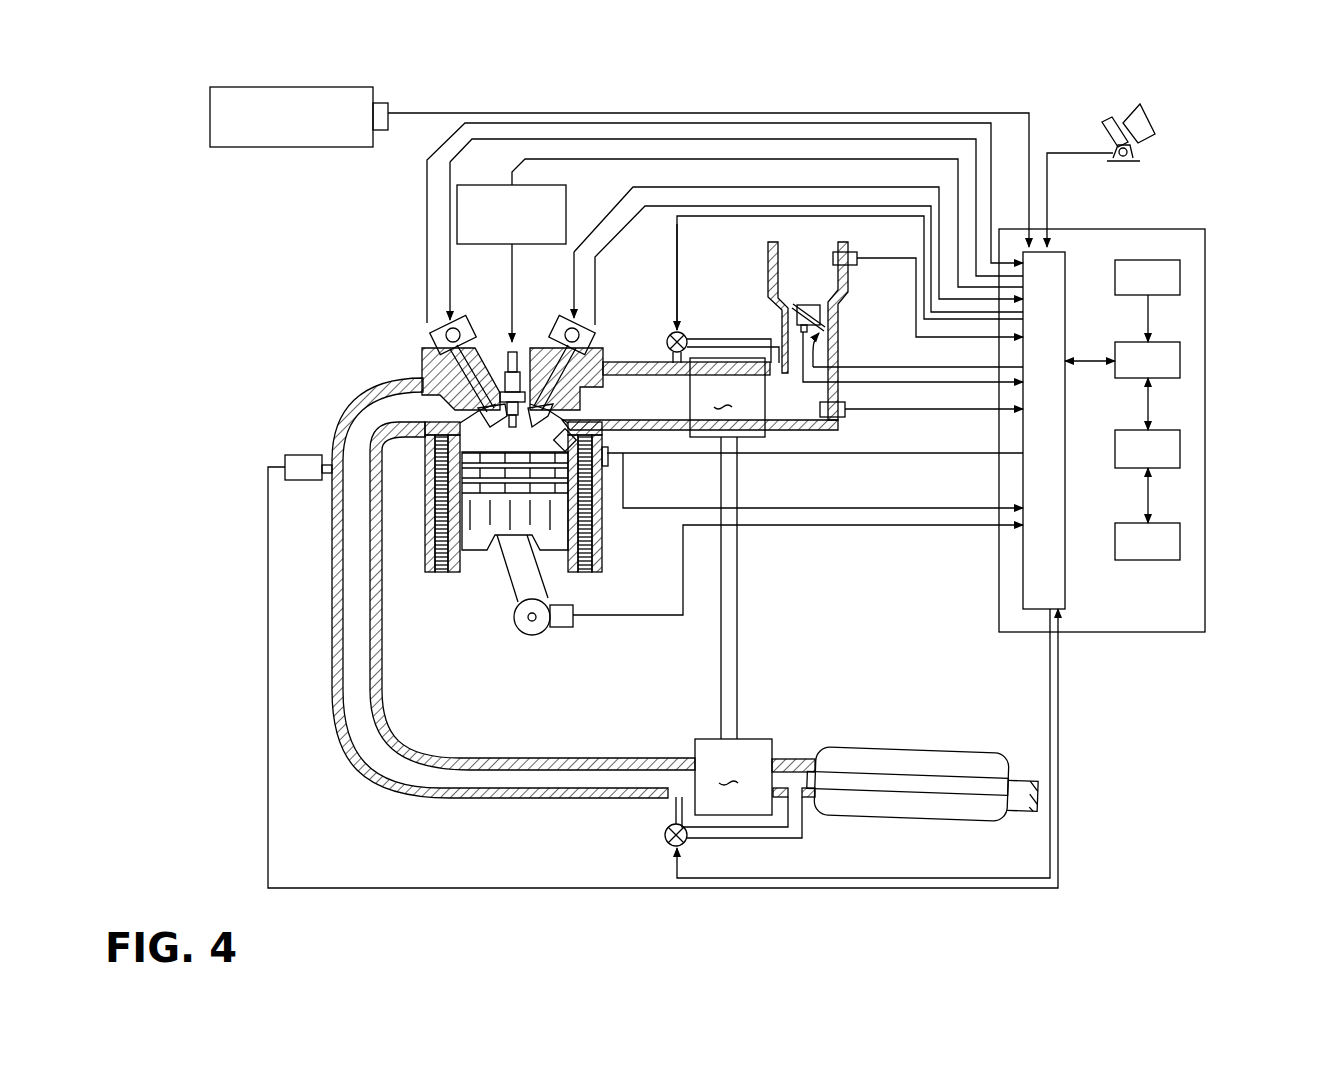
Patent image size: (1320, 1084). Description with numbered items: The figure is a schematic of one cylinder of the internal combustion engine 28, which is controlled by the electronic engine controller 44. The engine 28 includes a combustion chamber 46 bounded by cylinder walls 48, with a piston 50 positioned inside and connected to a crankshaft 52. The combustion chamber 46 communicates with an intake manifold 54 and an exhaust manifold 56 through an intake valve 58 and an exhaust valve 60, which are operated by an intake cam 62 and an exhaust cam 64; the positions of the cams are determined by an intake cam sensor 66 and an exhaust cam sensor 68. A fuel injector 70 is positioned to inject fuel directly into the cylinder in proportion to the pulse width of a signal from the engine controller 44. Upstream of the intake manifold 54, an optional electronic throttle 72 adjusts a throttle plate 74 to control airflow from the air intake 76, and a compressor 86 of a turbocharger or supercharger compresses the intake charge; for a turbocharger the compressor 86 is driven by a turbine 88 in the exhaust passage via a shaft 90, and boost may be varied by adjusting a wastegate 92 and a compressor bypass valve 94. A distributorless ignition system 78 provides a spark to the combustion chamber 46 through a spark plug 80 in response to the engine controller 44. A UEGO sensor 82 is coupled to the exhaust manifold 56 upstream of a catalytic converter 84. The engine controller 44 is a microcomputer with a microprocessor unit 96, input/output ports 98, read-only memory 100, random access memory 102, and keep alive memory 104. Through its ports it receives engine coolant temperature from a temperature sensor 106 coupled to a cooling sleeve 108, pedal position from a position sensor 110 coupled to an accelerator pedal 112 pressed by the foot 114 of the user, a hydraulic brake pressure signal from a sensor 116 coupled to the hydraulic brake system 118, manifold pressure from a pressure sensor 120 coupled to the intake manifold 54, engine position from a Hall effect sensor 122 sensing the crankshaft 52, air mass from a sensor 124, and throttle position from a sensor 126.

The internal combustion engine 28 is at (342, 293).
The electronic engine controller 44 is at (1197, 229).
The combustion chamber 46 is at (508, 443).
The cylinder walls 48 is at (462, 570).
The piston 50 is at (500, 520).
The crankshaft 52 is at (516, 626).
The intake manifold 54 is at (670, 410).
The exhaust manifold 56 is at (370, 418).
The intake valve 58 is at (615, 400).
The exhaust valve 60 is at (505, 418).
The intake cam 62 is at (560, 318).
The exhaust cam 64 is at (468, 320).
The intake cam sensor 66 is at (590, 342).
The exhaust cam sensor 68 is at (436, 324).
The fuel injector 70 is at (595, 430).
The electronic throttle 72 is at (827, 311).
The throttle plate 74 is at (780, 313).
The air intake 76 is at (798, 280).
The distributorless ignition system 78 is at (470, 185).
The spark plug 80 is at (518, 355).
The Universal Exhaust Gas Oxygen (UEGO) sensor 82 is at (285, 458).
The catalytic converter 84 is at (830, 752).
The compressor 86 is at (727, 397).
The turbine 88 is at (755, 777).
The shaft 90 is at (738, 625).
The wastegate 92 is at (664, 837).
The compressor bypass valve 94 is at (683, 334).
The microprocessor unit 96 is at (1180, 366).
The input/output ports 98 is at (1067, 258).
The read-only memory 100 is at (1180, 281).
The random access memory 102 is at (1180, 448).
The keep alive memory 104 is at (1180, 541).
The temperature sensor 106 is at (608, 456).
The cooling sleeve 108 is at (592, 523).
The position sensor 110 is at (1150, 151).
The accelerator pedal 112 is at (1104, 128).
The foot 114 is at (1145, 120).
The sensor 116 is at (388, 104).
The hydraulic brake system 118 is at (210, 112).
The pressure sensor 120 is at (843, 418).
The Hall effect sensor 122 is at (558, 628).
The sensor 124 is at (857, 253).
The sensor 126 is at (840, 356).